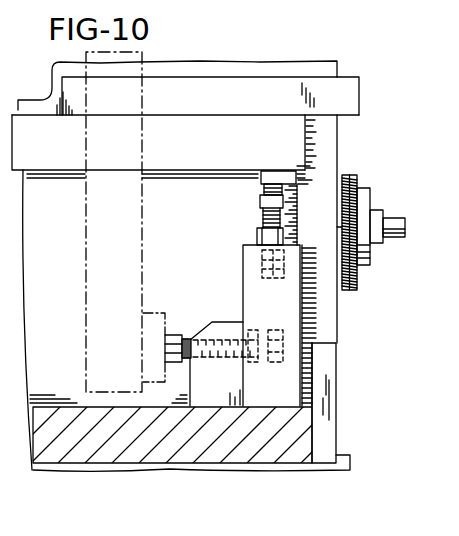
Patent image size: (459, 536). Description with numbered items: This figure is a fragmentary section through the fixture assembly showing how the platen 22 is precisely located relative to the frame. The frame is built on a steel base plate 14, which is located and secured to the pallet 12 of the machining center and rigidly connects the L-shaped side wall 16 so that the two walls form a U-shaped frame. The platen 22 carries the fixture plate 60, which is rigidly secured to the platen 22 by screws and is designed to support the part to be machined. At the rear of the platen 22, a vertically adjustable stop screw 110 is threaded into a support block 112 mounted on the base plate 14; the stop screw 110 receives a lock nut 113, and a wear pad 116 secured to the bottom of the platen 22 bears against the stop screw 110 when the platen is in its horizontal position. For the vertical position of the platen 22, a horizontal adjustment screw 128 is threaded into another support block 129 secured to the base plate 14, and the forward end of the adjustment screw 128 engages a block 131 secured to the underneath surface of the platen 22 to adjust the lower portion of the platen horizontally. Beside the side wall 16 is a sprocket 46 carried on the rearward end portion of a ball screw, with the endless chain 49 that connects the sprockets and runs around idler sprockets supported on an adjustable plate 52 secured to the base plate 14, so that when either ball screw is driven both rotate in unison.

The pallet 12 is at (247, 464).
The base plate 14 is at (182, 455).
The side wall 16 is at (233, 70).
The platen 22 is at (200, 122).
The sprocket 46 is at (357, 192).
The endless chain 49 is at (361, 282).
The adjustable plate 52 is at (327, 455).
The fixture plate 60 is at (352, 78).
The stop screw 110 is at (263, 220).
The support block 112 is at (250, 280).
The lock nut 113 is at (258, 236).
The wear pad 116 is at (278, 172).
The horizontal adjustment screw 128 is at (258, 332).
The support block 129 is at (222, 322).
The block 131 is at (161, 313).